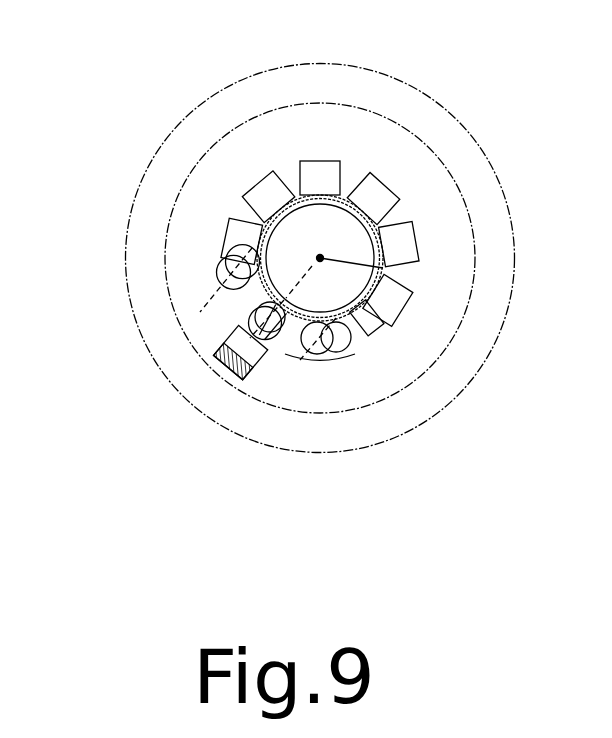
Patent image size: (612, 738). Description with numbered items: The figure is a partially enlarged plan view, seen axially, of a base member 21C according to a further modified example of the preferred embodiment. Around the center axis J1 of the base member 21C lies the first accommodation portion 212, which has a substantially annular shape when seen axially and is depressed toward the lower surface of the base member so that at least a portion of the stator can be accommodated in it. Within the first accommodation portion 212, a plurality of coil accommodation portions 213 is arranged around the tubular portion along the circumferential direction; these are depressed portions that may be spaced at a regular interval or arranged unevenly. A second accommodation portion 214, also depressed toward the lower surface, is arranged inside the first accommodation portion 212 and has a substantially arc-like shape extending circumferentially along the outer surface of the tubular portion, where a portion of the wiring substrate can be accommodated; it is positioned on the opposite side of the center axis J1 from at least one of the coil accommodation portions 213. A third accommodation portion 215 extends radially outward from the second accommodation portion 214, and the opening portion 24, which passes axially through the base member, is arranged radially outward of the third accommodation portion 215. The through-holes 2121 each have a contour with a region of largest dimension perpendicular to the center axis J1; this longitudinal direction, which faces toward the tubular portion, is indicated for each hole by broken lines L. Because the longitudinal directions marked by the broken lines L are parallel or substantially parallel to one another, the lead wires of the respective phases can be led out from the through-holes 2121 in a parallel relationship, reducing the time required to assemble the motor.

The base member 21C is at (76, 54).
The first accommodation portion 212 is at (392, 128).
The coil accommodation portions 213 is at (267, 188).
The through-holes 2121 is at (222, 253).
The second accommodation portion 214 is at (360, 325).
The third accommodation portion 215 is at (248, 357).
The opening portion 24 is at (220, 363).
The broken lines L is at (217, 300).
The center axis J1 is at (383, 268).